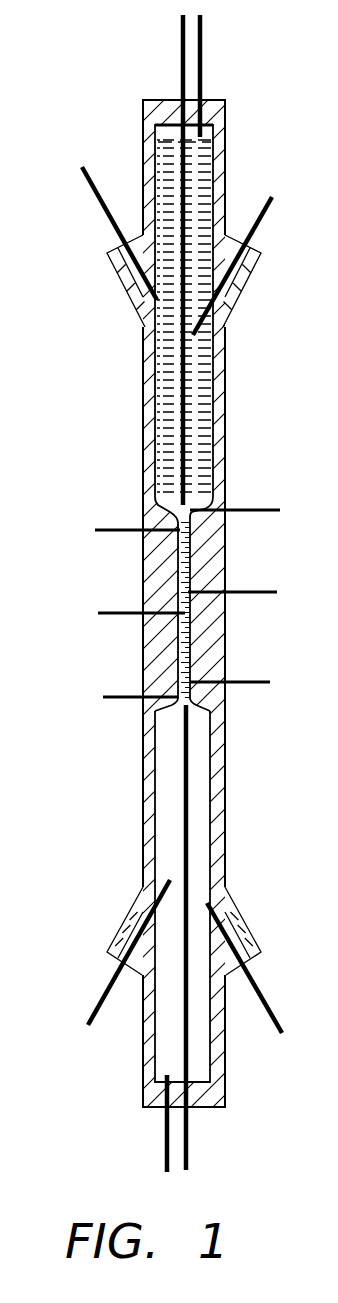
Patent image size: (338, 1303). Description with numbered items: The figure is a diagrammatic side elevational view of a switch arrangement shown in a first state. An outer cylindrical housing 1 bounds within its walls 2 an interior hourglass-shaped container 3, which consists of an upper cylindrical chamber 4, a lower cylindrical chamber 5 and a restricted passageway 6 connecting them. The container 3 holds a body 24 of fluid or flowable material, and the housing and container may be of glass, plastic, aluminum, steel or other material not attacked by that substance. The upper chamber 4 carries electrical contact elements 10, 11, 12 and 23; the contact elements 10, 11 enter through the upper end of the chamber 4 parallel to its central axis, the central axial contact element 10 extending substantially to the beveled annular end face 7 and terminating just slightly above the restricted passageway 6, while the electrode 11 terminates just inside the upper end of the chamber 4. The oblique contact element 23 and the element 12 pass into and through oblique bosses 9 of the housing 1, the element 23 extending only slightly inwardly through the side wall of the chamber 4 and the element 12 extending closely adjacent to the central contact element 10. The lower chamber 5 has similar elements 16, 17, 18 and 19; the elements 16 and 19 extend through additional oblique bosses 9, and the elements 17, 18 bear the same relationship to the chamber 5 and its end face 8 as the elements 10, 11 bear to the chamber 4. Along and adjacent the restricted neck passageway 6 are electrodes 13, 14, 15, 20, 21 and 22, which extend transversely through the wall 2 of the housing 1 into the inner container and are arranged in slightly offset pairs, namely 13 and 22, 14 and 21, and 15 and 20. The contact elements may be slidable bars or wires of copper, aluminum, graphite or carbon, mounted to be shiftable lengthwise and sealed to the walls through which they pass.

The outer cylindrical housing 1 is at (161, 593).
The walls 2 is at (186, 592).
The container 3 is at (189, 313).
The upper cylindrical chamber 4 is at (189, 311).
The lower cylindrical chamber 5 is at (217, 778).
The restricted passageway 6 is at (190, 568).
The beveled annular end face 7 is at (173, 520).
The end face 8 is at (145, 748).
The oblique bosses 9 is at (130, 294).
The contact element 10 is at (181, 48).
The contact element 11 is at (203, 48).
The contact element 12 is at (270, 197).
The electrode 13 is at (287, 488).
The electrode 14 is at (250, 590).
The electrode 15 is at (257, 680).
The contact element 16 is at (266, 1015).
The contact element 17 is at (190, 1138).
The contact element 18 is at (163, 1137).
The contact element 19 is at (97, 1005).
The electrode 20 is at (120, 700).
The electrode 21 is at (113, 615).
The electrode 22 is at (128, 535).
The oblique contact element 23 is at (92, 192).
The body of fluid or flowable material 24 is at (160, 173).